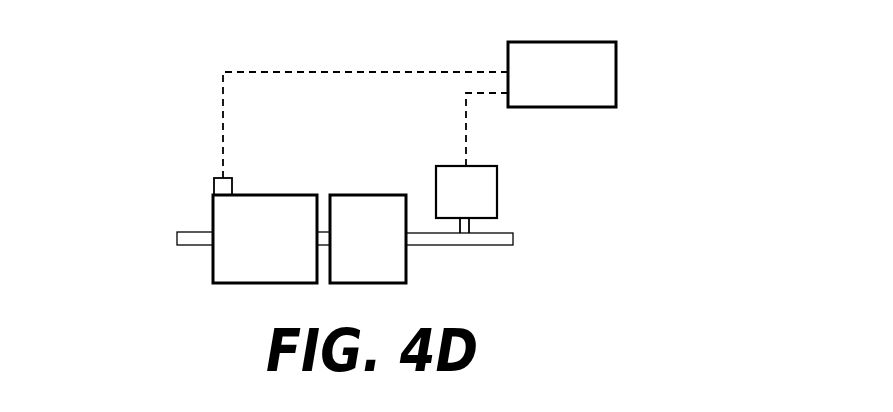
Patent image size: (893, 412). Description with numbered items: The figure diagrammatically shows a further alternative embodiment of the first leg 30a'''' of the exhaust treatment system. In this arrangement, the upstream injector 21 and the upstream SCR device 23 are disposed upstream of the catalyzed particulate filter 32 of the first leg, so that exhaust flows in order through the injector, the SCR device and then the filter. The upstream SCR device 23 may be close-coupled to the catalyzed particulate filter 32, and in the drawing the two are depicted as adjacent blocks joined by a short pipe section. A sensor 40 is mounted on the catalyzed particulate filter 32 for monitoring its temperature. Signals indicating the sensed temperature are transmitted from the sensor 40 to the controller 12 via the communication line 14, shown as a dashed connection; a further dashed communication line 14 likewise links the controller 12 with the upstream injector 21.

The first leg 30a'''' is at (142, 70).
The controller 12 is at (616, 74).
The communication line 14 is at (300, 70).
The upstream injector 21 is at (481, 166).
The upstream SCR device 23 is at (346, 194).
The catalyzed particulate filter 32 is at (254, 194).
The sensor 40 is at (214, 182).